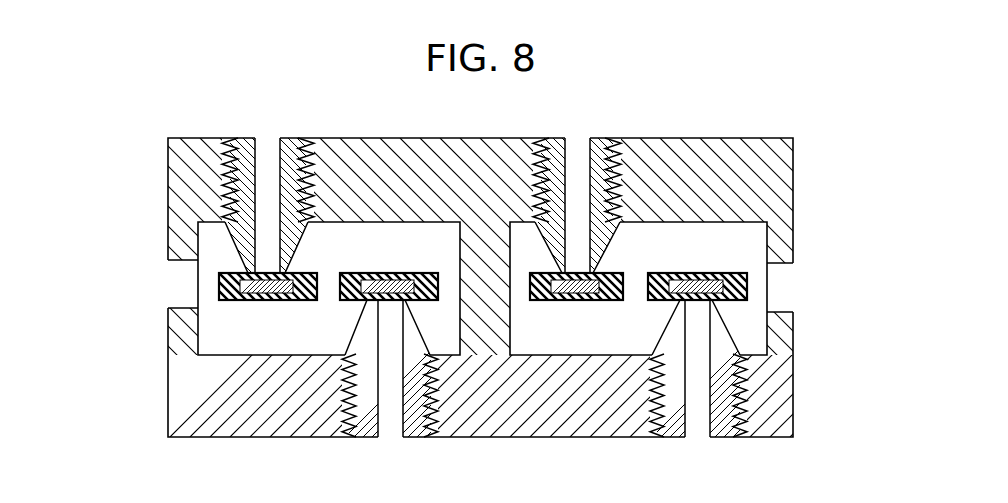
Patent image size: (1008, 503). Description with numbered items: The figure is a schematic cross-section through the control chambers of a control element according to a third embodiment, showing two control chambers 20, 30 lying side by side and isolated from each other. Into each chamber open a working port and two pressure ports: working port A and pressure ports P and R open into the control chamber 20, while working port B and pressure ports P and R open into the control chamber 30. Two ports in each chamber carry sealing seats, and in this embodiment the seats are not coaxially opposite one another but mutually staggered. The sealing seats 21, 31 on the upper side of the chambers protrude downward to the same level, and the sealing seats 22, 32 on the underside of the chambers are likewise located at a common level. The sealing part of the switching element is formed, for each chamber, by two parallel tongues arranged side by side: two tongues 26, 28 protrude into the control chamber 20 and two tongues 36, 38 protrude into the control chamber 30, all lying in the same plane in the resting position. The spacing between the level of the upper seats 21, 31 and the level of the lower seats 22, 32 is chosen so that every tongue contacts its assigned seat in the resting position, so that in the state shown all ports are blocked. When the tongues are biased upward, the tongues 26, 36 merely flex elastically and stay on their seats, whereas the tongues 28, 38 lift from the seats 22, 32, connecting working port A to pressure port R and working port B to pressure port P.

The control chamber 20 is at (284, 332).
The sealing seat 21 is at (247, 253).
The sealing seat 22 is at (347, 354).
The tongue 26 is at (250, 300).
The tongue 28 is at (390, 283).
The control chamber 30 is at (598, 333).
The sealing seat 31 is at (593, 262).
The sealing seat 32 is at (720, 321).
The tongue 36 is at (563, 300).
The tongue 38 is at (720, 287).
The pressure port P is at (268, 157).
The pressure port R is at (580, 160).
The working port A is at (177, 283).
The working port B is at (780, 287).